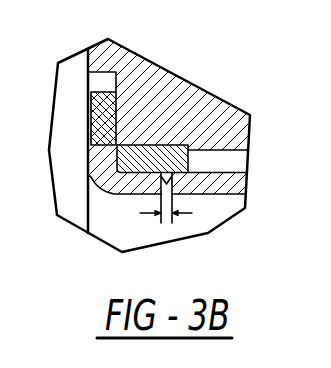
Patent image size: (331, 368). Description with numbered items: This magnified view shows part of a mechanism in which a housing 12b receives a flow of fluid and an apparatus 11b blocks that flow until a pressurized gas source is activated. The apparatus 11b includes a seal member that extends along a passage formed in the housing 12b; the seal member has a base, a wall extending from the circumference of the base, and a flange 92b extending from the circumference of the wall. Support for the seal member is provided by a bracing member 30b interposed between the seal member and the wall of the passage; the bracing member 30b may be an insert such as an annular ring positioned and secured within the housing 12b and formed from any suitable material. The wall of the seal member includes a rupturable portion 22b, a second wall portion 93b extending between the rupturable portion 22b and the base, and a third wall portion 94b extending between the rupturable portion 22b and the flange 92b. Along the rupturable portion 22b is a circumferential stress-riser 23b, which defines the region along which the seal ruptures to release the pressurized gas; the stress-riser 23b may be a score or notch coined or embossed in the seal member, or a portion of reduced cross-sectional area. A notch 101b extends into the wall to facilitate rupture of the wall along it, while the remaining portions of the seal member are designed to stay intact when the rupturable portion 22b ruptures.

The apparatus for blocking the flow of fluid 11b is at (45, 86).
The housing 12b is at (163, 86).
The bracing member 30b is at (141, 155).
The notch 101b is at (185, 118).
The flange 92b is at (92, 117).
The rupturable portion 22b is at (151, 215).
The stress-riser 23b is at (172, 223).
The second wall portion 93b is at (204, 184).
The third wall portion 94b is at (144, 178).